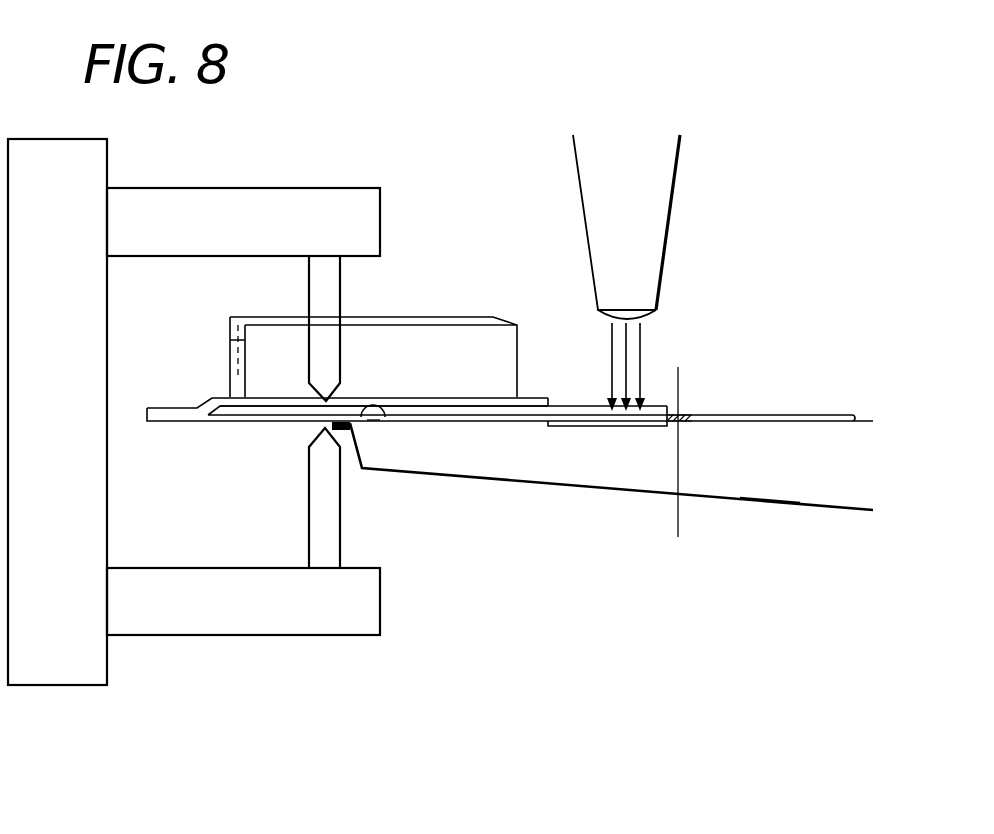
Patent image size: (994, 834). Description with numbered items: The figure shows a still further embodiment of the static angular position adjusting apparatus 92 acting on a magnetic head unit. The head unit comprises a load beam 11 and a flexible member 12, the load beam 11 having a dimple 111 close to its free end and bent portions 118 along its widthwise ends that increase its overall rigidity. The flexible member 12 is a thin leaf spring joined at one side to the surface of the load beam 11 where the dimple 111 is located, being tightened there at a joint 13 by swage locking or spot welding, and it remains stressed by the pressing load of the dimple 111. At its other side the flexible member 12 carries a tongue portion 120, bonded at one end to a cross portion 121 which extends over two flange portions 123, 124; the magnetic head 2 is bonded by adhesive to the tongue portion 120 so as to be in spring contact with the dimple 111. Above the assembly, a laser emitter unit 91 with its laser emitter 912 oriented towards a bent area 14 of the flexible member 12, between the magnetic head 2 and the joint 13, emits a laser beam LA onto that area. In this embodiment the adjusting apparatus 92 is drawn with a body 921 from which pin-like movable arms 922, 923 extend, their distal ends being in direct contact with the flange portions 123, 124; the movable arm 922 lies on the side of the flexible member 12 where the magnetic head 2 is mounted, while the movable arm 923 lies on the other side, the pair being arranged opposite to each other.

The angular position adjusting apparatus 92 is at (194, 419).
The support post 921 is at (97, 302).
The movable arm 922 is at (320, 290).
The movable arm 923 is at (318, 520).
The cross portion 121 is at (177, 407).
The flexible member 12 is at (443, 416).
The tongue portion 120 is at (447, 398).
The dimple 111 is at (376, 403).
The flange portion 123 is at (422, 489).
The flange portion 124 is at (377, 420).
The magnetic head 2 is at (485, 328).
The bent area 14 is at (575, 405).
The joint 13 is at (687, 415).
The load beam 11 is at (602, 499).
The bent portion 118 is at (767, 488).
The laser emitter unit 91 is at (618, 227).
The laser emitter 912 is at (663, 203).
The laser beam LA is at (635, 340).